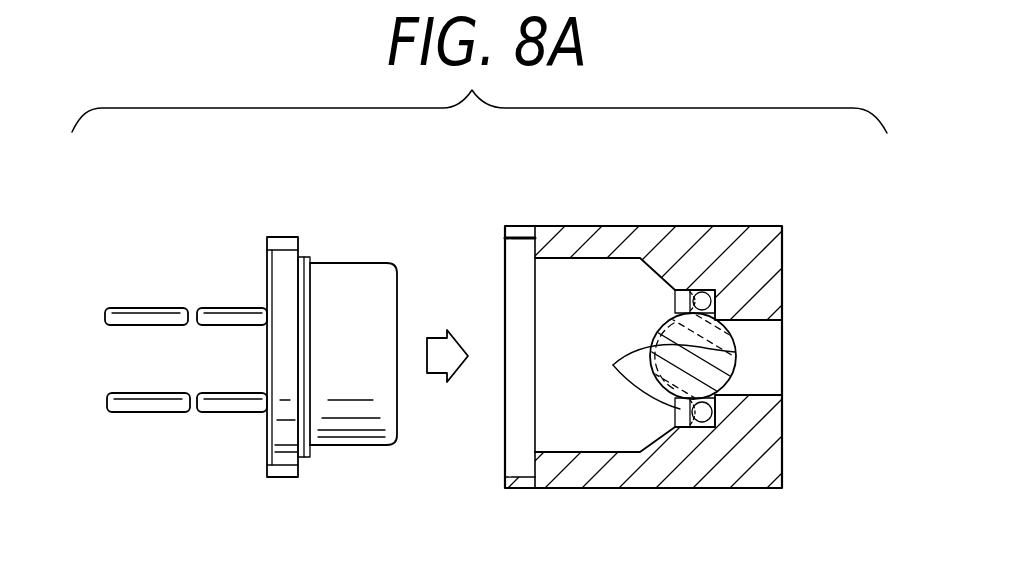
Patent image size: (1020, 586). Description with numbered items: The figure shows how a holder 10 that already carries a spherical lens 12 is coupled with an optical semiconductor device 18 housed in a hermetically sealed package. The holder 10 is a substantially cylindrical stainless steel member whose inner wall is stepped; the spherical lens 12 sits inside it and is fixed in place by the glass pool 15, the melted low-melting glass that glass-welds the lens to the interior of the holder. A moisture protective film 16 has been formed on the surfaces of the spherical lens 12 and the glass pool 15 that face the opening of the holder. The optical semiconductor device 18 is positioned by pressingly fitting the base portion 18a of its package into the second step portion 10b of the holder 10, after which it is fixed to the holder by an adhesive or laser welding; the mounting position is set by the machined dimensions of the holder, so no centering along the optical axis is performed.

The holder 10 is at (622, 243).
The second step portion 10b is at (533, 247).
The spherical lens 12 is at (735, 352).
The glass pool 15 is at (715, 303).
The moisture protective film 16 is at (653, 376).
The optical semiconductor device 18 is at (348, 420).
The base portion 18a is at (298, 248).